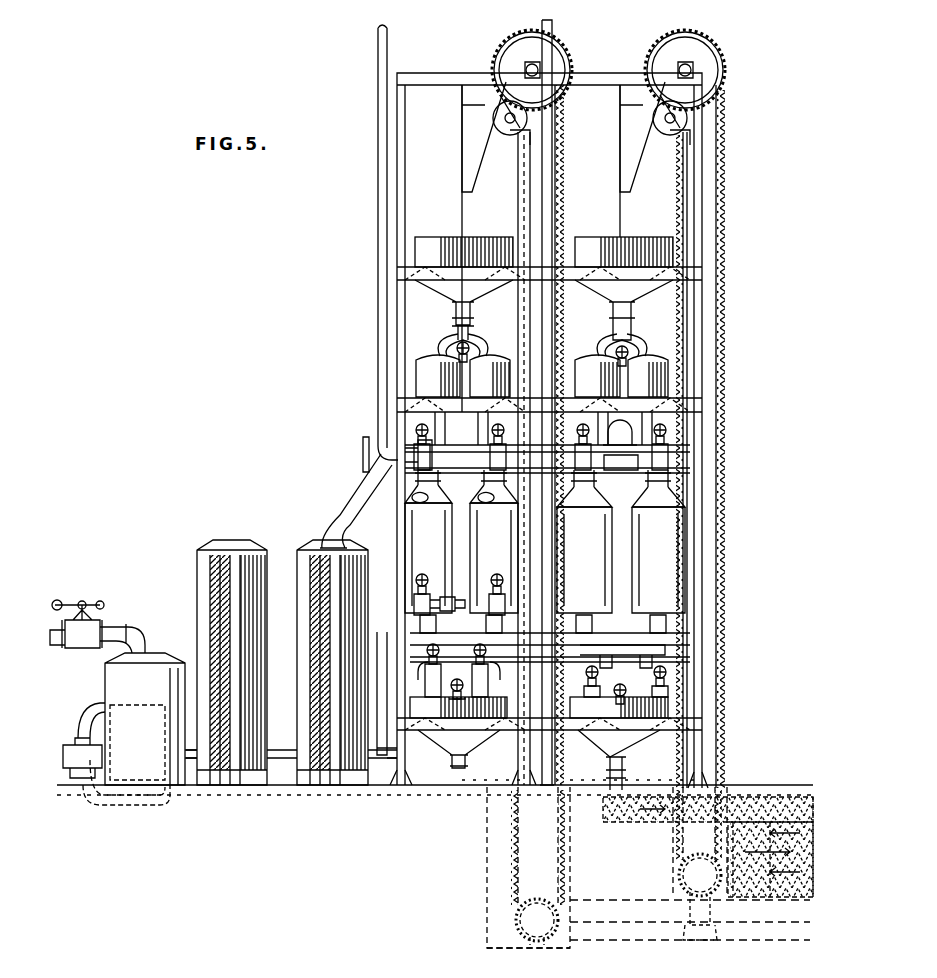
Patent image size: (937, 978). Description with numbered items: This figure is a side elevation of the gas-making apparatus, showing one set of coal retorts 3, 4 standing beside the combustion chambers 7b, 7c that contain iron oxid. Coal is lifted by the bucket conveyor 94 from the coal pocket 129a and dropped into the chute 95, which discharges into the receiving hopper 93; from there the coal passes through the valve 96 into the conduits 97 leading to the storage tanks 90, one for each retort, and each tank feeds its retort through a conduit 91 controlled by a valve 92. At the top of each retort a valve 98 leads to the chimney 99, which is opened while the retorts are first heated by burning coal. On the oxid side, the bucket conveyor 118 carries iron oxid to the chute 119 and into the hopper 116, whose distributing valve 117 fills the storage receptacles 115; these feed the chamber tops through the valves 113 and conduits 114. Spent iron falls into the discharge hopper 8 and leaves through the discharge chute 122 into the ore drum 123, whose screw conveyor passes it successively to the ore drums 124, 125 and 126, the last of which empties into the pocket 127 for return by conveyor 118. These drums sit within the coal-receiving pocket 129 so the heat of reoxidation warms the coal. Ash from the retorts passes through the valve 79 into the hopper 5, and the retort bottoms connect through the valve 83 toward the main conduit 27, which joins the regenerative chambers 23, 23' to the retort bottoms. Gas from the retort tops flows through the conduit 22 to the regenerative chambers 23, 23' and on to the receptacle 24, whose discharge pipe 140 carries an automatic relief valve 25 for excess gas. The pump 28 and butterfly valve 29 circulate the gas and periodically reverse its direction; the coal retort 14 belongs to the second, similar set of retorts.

The chimney 99 is at (553, 28).
The bucket conveyor 94 is at (566, 127).
The bucket conveyor 118 is at (723, 141).
The chute 95 is at (463, 149).
The chute 119 is at (621, 163).
The hopper 93 is at (468, 244).
The hopper 116 is at (620, 244).
The valve 96 is at (456, 320).
The conduits 97 is at (473, 333).
The storage tanks 90 is at (428, 360).
The storage receptacles 115 is at (592, 360).
The distributing valve 117 is at (630, 322).
The valve 98 is at (410, 440).
The conduit 91 is at (483, 428).
The conduits 114 is at (598, 424).
The valve 92 is at (438, 476).
The valves 113 is at (596, 479).
The coal retort 3 is at (428, 526).
The coal retort 4 is at (494, 526).
The combustion chamber 7b is at (584, 535).
The combustion chamber 7c is at (658, 533).
The conduit 22 is at (345, 496).
The regenerative chamber 23' is at (226, 648).
The regenerative chamber 23 is at (332, 653).
The receptacle 24 is at (105, 677).
The automatic relief valve 25 is at (95, 620).
The discharge pipe 140 is at (118, 632).
The conduit 27 is at (390, 635).
The pump 28 is at (85, 725).
The butterfly valve 29 is at (172, 800).
The valve 83 is at (412, 602).
The valve 79 is at (428, 672).
The coal retort 14 is at (590, 676).
The hopper 5 is at (466, 740).
The discharge hopper 8 is at (619, 727).
The discharge chute 122 is at (624, 773).
The coal-receiving pocket 129 is at (760, 795).
The ore drum 123 is at (797, 808).
The ore drum 124 is at (752, 858).
The ore drum 125 is at (779, 878).
The ore drum 126 is at (814, 850).
The pocket 127 is at (722, 893).
The coal pocket 129a is at (487, 893).